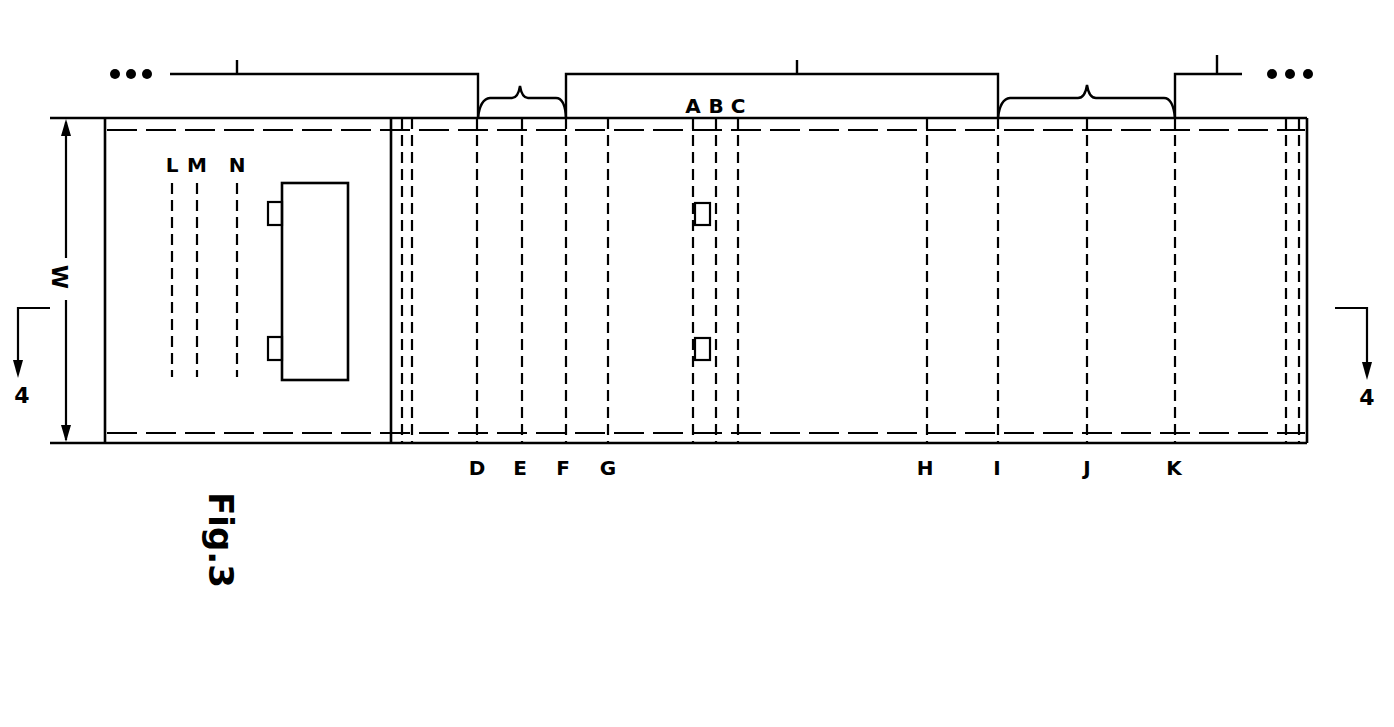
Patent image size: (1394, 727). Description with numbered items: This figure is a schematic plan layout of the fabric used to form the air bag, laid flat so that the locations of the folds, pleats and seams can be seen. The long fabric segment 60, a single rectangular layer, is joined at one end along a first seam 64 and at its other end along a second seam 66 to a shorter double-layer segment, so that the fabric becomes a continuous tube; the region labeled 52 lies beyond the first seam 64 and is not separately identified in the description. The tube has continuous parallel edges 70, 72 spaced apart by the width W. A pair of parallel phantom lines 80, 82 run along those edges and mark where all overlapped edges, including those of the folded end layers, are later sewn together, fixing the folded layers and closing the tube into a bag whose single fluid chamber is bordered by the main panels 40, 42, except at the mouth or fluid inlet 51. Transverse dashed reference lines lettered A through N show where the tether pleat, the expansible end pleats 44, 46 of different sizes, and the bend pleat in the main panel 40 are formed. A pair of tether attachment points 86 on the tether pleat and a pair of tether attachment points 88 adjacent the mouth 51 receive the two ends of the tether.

The main panel 40 is at (711, 73).
The main panel 42 is at (782, 75).
The expansible end pleat 44 is at (522, 87).
The expansible end pleat 46 is at (1086, 87).
The mouth 51 is at (308, 381).
The panel 52 is at (360, 410).
The long fabric segment 60 is at (445, 395).
The first seam 64 is at (413, 190).
The second seam 66 is at (1300, 286).
The edge 70 is at (190, 118).
The edge 72 is at (176, 445).
The phantom line 80 is at (1265, 130).
The phantom line 82 is at (1215, 437).
The tether attachment points 86 is at (697, 215).
The tether attachment points 88 is at (270, 342).